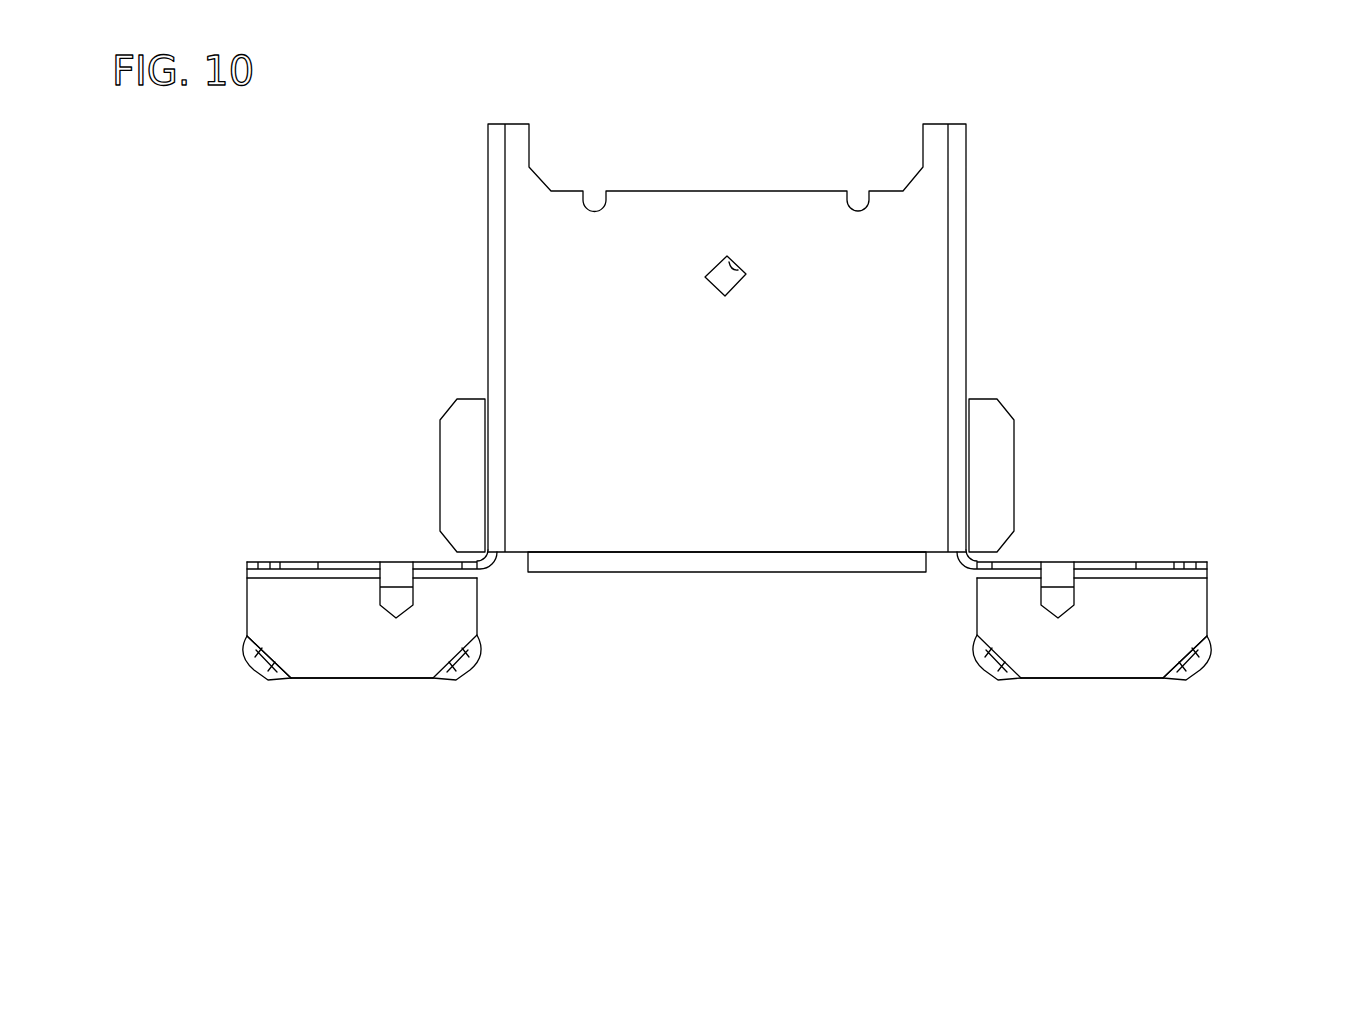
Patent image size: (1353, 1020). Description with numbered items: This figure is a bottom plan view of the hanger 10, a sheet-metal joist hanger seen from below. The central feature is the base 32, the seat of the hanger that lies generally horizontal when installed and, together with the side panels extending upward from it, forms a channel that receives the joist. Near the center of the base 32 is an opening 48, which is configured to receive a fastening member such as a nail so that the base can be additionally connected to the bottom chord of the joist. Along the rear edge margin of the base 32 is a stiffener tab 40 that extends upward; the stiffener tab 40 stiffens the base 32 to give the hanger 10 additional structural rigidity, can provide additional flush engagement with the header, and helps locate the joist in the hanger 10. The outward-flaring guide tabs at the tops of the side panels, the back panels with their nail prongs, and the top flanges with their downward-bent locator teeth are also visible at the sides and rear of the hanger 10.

The hanger 10 is at (548, 768).
The base 32 is at (693, 383).
The stiffener tab 40 is at (712, 572).
The opening 48 is at (732, 267).